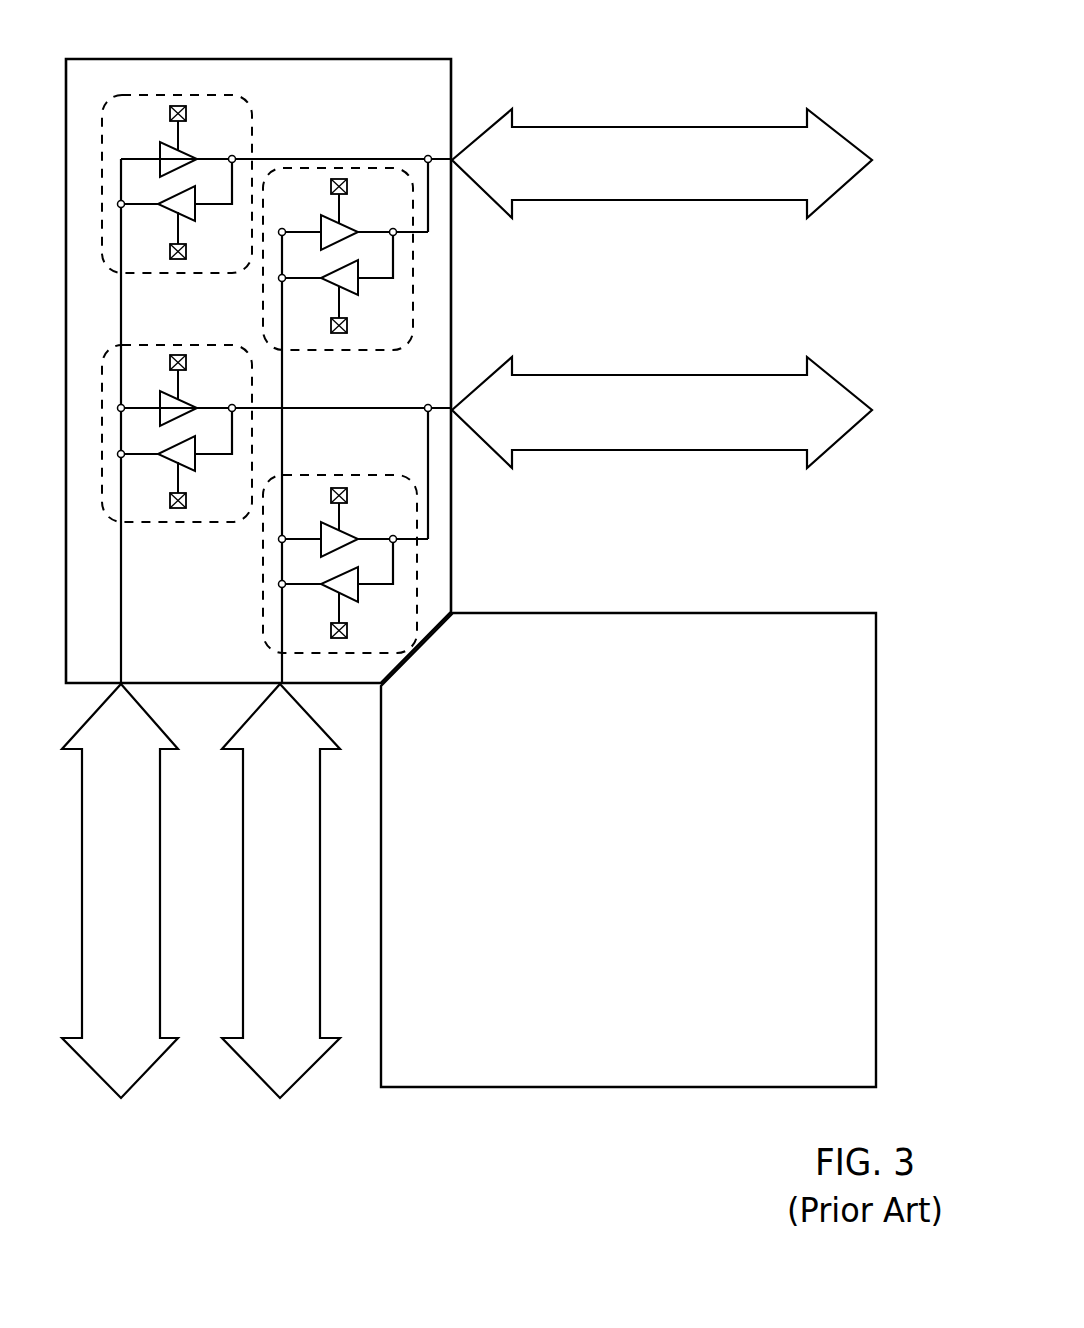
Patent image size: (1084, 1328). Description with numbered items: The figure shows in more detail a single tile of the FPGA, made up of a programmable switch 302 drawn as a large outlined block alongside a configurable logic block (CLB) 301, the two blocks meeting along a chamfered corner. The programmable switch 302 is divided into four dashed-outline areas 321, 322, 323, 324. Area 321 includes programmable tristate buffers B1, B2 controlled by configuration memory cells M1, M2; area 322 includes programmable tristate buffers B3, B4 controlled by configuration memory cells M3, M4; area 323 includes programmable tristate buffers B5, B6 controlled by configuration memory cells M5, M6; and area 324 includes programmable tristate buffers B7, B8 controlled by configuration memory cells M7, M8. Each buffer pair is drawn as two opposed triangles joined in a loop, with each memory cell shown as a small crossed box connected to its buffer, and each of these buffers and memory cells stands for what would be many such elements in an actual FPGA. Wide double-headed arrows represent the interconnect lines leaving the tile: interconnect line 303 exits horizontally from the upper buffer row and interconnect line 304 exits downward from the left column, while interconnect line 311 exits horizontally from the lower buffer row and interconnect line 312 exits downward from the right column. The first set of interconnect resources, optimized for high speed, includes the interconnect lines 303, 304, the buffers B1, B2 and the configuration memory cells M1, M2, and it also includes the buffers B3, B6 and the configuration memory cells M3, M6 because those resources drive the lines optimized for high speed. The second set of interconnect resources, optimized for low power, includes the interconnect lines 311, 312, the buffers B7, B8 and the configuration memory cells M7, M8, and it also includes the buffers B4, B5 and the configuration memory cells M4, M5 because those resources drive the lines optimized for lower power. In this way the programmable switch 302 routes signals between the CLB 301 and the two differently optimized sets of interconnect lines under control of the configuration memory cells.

The configurable logic block (CLB) 301 is at (648, 864).
The programmable switch 302 is at (295, 59).
The interconnect line 303 is at (708, 179).
The interconnect line 304 is at (120, 891).
The interconnect line 311 is at (713, 429).
The interconnect line 312 is at (281, 891).
The area 321 is at (137, 272).
The area 322 is at (297, 350).
The area 323 is at (137, 522).
The area 324 is at (263, 570).
The programmable tristate buffer B1 is at (190, 155).
The programmable tristate buffer B2 is at (193, 212).
The programmable tristate buffer B3 is at (350, 228).
The programmable tristate buffer B4 is at (355, 287).
The programmable tristate buffer B5 is at (190, 404).
The programmable tristate buffer B6 is at (193, 461).
The programmable tristate buffer B7 is at (350, 535).
The programmable tristate buffer B8 is at (354, 589).
The configuration memory cell M1 is at (195, 127).
The configuration memory cell M2 is at (160, 237).
The configuration memory cell M3 is at (355, 201).
The configuration memory cell M4 is at (322, 313).
The configuration memory cell M5 is at (195, 376).
The configuration memory cell M6 is at (160, 487).
The configuration memory cell M7 is at (355, 507).
The configuration memory cell M8 is at (318, 617).